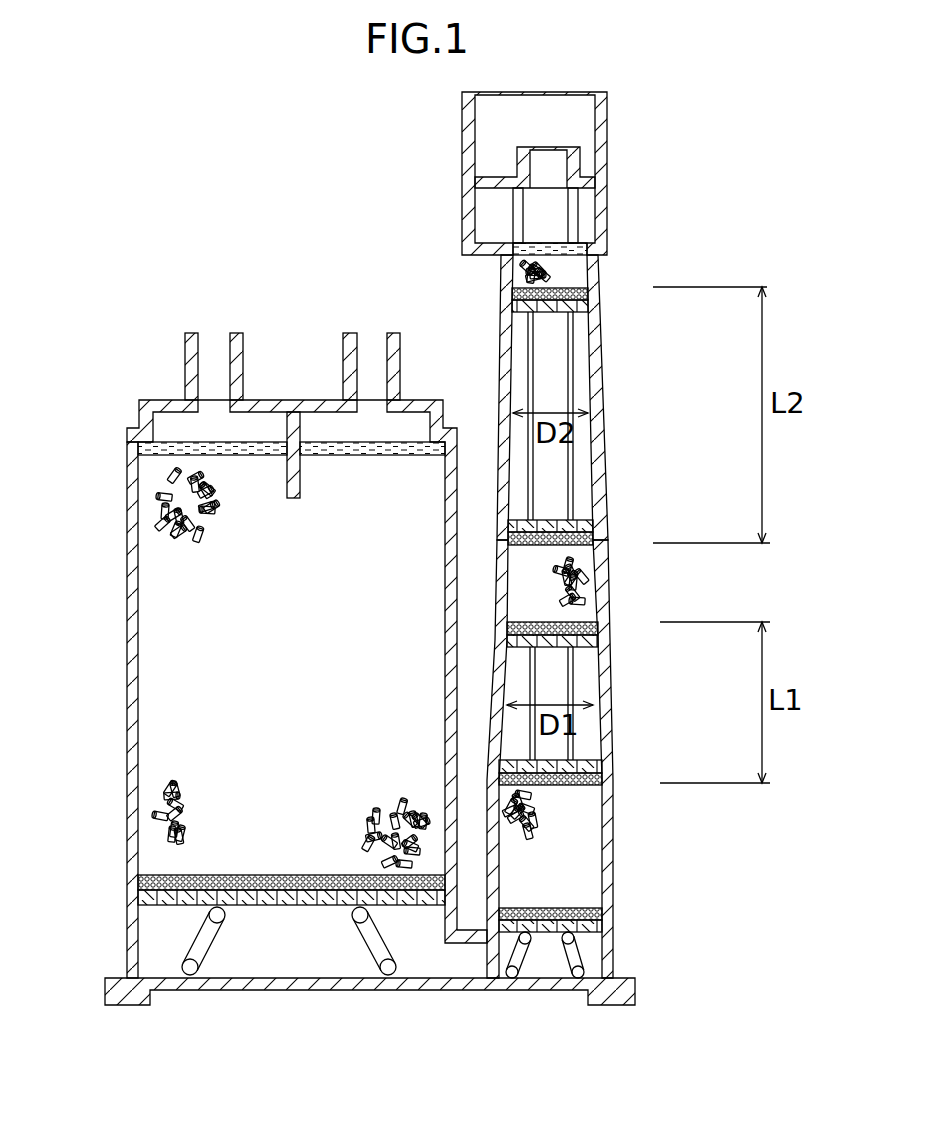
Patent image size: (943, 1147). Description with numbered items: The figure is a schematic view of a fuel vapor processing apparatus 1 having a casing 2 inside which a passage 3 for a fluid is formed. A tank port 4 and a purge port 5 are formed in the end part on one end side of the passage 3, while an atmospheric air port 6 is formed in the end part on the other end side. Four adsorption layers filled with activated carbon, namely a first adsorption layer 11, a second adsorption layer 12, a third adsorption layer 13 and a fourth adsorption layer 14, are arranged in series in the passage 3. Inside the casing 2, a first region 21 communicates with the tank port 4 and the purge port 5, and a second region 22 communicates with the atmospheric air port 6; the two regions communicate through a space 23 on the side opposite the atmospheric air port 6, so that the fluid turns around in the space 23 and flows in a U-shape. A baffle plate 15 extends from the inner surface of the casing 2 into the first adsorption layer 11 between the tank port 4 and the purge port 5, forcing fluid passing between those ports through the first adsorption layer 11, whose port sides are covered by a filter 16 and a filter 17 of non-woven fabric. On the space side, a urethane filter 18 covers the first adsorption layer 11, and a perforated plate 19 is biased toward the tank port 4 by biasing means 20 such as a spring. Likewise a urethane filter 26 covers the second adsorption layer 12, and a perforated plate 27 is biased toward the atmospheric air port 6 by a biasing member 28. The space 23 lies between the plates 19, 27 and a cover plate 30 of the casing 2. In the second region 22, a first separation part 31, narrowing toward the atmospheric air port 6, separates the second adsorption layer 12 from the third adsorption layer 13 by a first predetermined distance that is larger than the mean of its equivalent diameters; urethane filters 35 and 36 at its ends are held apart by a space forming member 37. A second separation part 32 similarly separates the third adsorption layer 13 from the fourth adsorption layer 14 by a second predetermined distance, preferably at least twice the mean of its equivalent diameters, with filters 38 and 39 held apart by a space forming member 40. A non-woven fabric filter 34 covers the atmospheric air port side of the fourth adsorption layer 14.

The fuel vapor processing apparatus 1 is at (124, 405).
The casing 2 is at (133, 705).
The passage 3 is at (168, 651).
The tank port 4 is at (213, 347).
The purge port 5 is at (365, 340).
The atmospheric air port 6 is at (555, 172).
The first adsorption layer 11 is at (203, 584).
The second adsorption layer 12 is at (582, 870).
The third adsorption layer 13 is at (518, 575).
The fourth adsorption layer 14 is at (573, 277).
The baffle plate 15 is at (293, 482).
The filter 16 is at (228, 453).
The filter 17 is at (377, 443).
The filter 18 is at (252, 875).
The plate 19 is at (298, 893).
The biasing means 20 is at (190, 967).
The first region 21 is at (172, 757).
The second region 22 is at (585, 385).
The space 23 is at (330, 957).
The filter 26 is at (600, 915).
The plate 27 is at (592, 927).
The biasing member 28 is at (577, 972).
The cover plate 30 is at (455, 987).
The first separation part 31 is at (592, 735).
The second separation part 32 is at (570, 445).
The filter 34 is at (575, 248).
The filter 35 is at (595, 790).
The filter 36 is at (507, 628).
The space forming member 37 is at (573, 690).
The filter 38 is at (593, 535).
The filter 39 is at (590, 302).
The space forming member 40 is at (568, 485).